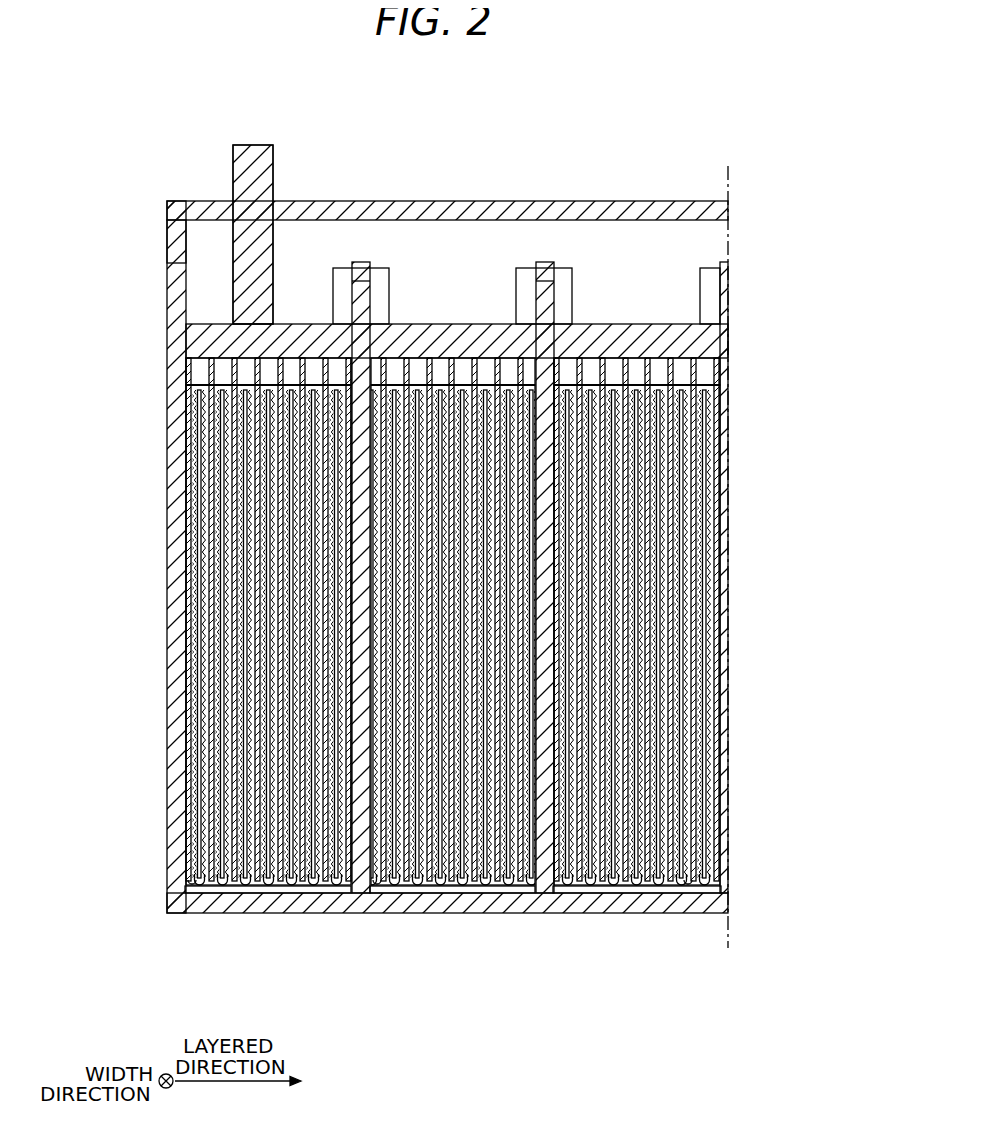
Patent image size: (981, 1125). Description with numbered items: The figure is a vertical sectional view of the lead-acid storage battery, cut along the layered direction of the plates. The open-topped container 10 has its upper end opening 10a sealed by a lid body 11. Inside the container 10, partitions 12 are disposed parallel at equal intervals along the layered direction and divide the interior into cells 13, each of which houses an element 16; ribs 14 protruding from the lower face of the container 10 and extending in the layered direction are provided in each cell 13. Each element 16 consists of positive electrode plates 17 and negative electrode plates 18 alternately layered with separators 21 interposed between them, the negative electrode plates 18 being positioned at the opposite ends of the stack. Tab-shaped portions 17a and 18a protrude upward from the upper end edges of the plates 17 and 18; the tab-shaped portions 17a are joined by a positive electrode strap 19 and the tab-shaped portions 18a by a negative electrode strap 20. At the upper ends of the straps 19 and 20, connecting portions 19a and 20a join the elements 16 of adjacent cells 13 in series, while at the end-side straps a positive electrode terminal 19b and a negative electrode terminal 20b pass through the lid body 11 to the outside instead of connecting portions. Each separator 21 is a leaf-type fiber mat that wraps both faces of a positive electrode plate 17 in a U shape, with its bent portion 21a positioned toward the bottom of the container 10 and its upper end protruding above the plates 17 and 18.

The container 10 is at (158, 905).
The upper end opening 10a is at (183, 248).
The lid body 11 is at (613, 200).
The partition 12 is at (325, 878).
The cell 13 is at (233, 878).
The rib 14 is at (700, 881).
The element 16 is at (190, 880).
The positive electrode plate 17 is at (215, 528).
The tab-shaped portion 17a is at (467, 353).
The negative electrode plate 18 is at (205, 645).
The tab-shaped portion 18a is at (226, 352).
The positive electrode strap 19 is at (408, 314).
The connecting portion 19a is at (333, 270).
The positive electrode terminal 19b is at (253, 234).
The negative electrode strap 20 is at (713, 300).
The connecting portion 20a is at (373, 268).
The negative electrode terminal 20b is at (245, 150).
The separator 21 is at (200, 595).
The bent portion 21a is at (258, 873).